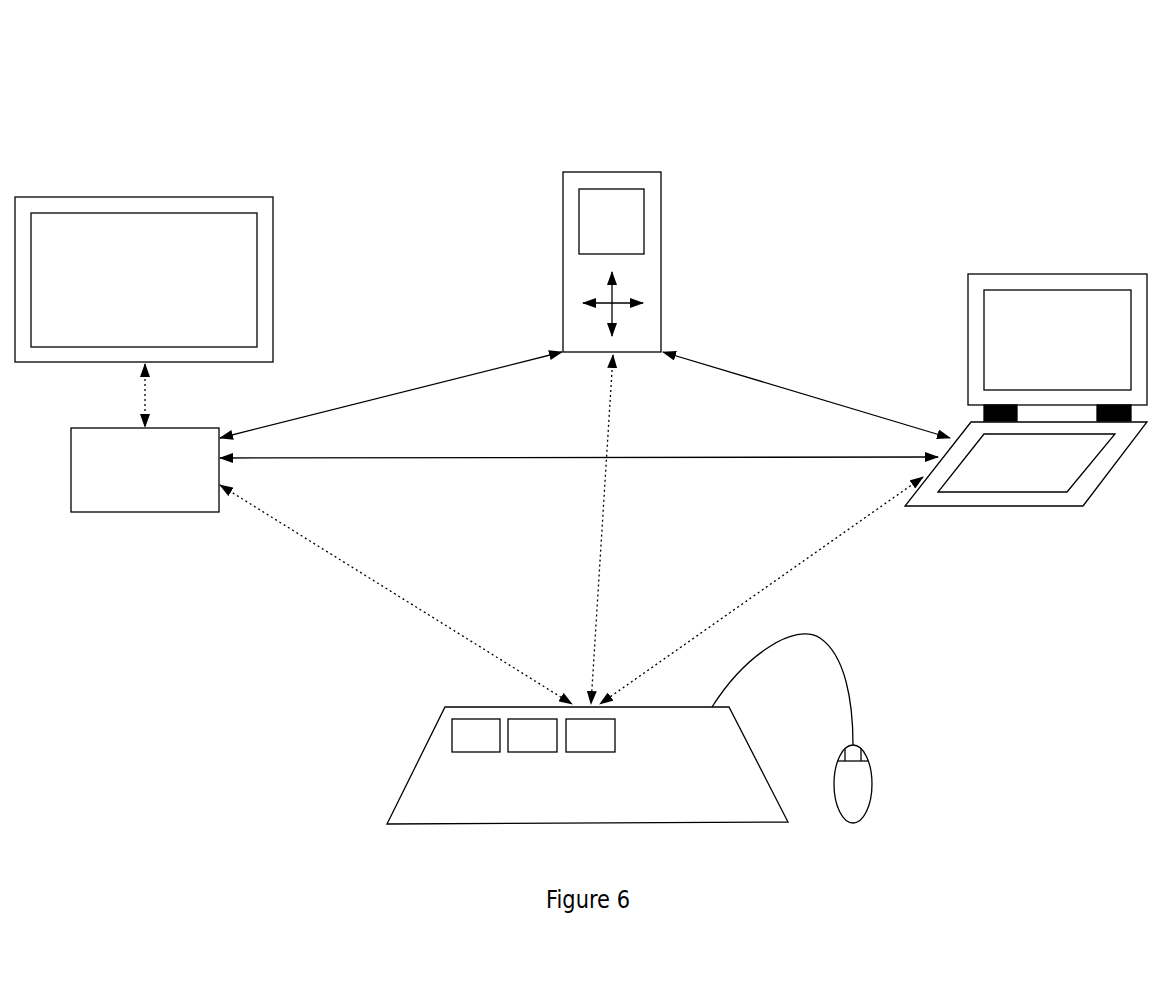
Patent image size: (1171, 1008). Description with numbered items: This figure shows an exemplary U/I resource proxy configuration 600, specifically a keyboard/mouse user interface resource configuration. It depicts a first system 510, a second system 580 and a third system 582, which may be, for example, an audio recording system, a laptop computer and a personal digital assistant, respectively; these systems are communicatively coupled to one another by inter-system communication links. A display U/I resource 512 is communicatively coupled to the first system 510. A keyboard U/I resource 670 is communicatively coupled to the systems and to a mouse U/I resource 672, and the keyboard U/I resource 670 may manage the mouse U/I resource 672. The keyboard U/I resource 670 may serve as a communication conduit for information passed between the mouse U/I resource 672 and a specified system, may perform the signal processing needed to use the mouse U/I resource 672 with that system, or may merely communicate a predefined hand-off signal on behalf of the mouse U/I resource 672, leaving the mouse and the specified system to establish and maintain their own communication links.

The U/I resource proxy configuration 600 is at (82, 118).
The display U/I resource 512 is at (273, 236).
The first system 510 is at (108, 512).
The third system 582 is at (563, 298).
The second system 580 is at (968, 313).
The keyboard U/I resource 670 is at (408, 783).
The mouse U/I resource 672 is at (871, 798).